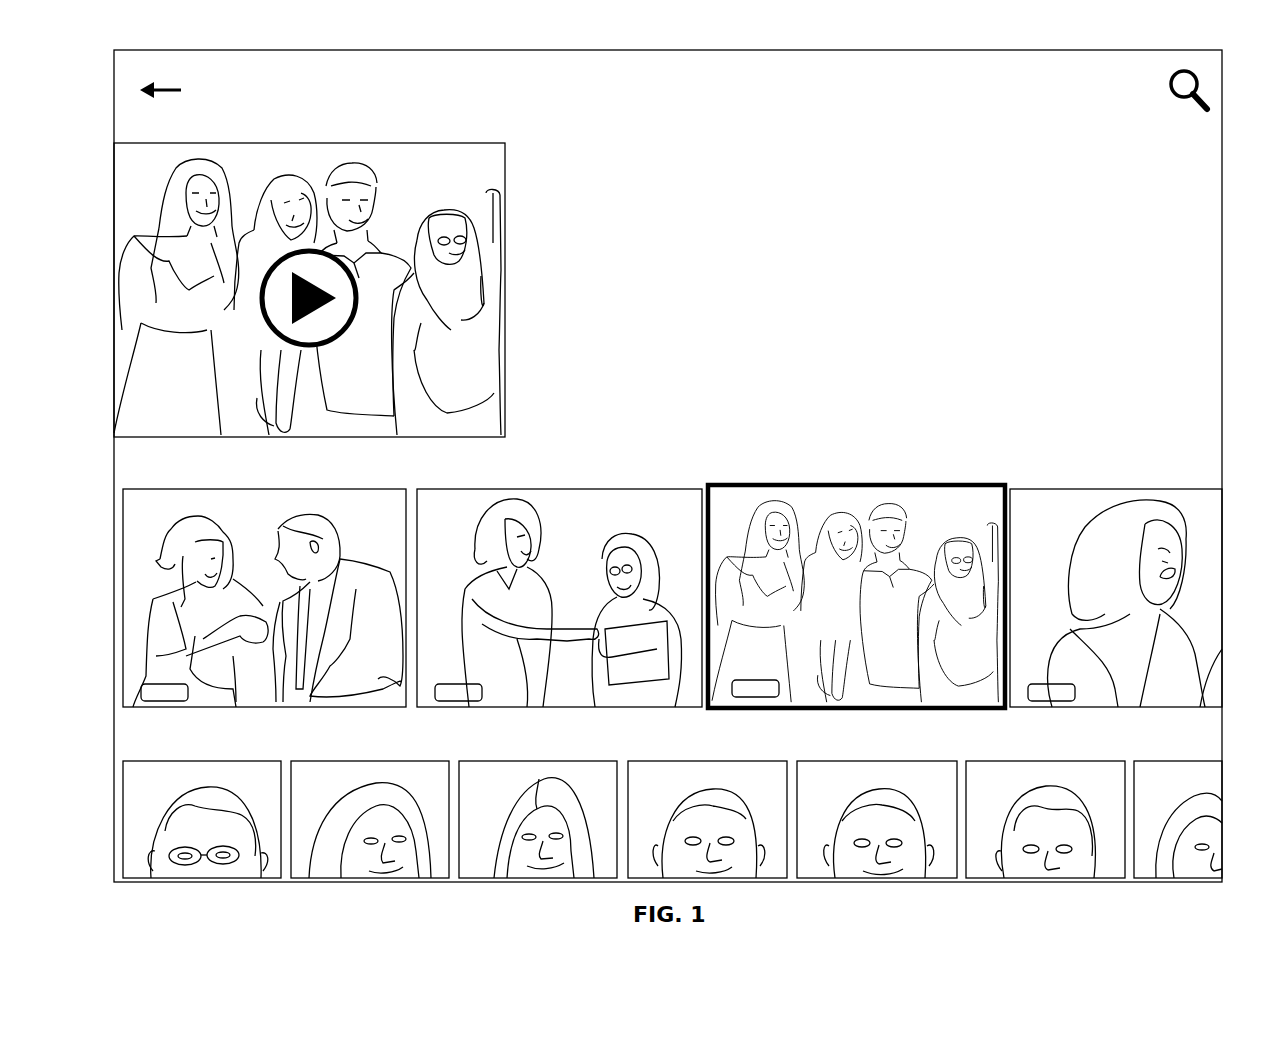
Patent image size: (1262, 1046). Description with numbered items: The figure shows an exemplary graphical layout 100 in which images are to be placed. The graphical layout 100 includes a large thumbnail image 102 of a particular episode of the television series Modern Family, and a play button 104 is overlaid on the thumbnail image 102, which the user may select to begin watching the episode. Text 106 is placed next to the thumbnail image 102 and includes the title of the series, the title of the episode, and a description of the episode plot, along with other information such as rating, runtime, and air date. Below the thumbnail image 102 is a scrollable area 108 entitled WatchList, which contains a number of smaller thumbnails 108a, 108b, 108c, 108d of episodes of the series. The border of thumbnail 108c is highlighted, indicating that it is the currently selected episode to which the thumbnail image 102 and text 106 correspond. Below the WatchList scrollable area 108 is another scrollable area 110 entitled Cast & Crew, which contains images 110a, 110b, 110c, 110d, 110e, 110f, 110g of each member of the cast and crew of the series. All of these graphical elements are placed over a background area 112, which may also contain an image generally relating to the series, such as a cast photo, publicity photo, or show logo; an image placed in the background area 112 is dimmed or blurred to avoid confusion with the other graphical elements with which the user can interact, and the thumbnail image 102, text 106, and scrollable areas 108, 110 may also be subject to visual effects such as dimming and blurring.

The graphical layout 100 is at (168, 49).
The thumbnail image 102 is at (290, 142).
The play button 104 is at (378, 212).
The text 106 is at (722, 210).
The scrollable area 108 is at (243, 469).
The thumbnail 108a is at (345, 488).
The thumbnail 108b is at (672, 489).
The thumbnail 108c is at (978, 486).
The thumbnail 108d is at (1203, 487).
The scrollable area 110 is at (265, 736).
The image 110a is at (270, 761).
The image 110b is at (438, 759).
The image 110c is at (518, 759).
The image 110d is at (688, 759).
The image 110e is at (858, 759).
The image 110f is at (1023, 759).
The image 110g is at (1193, 759).
The background area 112 is at (887, 92).